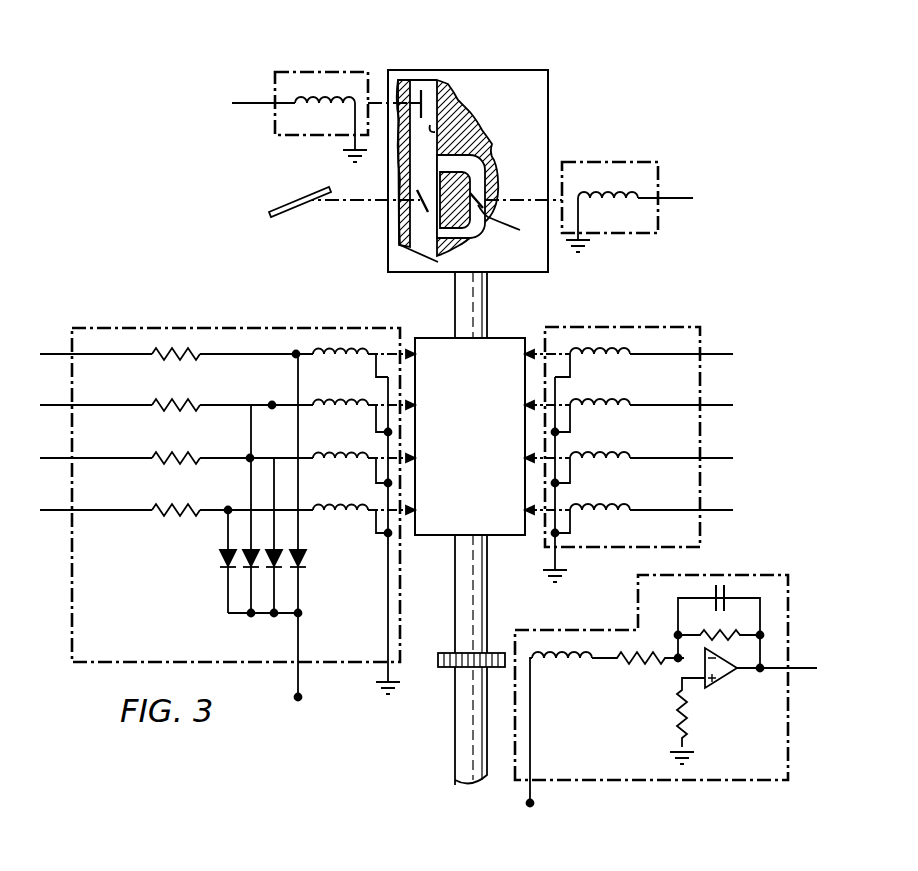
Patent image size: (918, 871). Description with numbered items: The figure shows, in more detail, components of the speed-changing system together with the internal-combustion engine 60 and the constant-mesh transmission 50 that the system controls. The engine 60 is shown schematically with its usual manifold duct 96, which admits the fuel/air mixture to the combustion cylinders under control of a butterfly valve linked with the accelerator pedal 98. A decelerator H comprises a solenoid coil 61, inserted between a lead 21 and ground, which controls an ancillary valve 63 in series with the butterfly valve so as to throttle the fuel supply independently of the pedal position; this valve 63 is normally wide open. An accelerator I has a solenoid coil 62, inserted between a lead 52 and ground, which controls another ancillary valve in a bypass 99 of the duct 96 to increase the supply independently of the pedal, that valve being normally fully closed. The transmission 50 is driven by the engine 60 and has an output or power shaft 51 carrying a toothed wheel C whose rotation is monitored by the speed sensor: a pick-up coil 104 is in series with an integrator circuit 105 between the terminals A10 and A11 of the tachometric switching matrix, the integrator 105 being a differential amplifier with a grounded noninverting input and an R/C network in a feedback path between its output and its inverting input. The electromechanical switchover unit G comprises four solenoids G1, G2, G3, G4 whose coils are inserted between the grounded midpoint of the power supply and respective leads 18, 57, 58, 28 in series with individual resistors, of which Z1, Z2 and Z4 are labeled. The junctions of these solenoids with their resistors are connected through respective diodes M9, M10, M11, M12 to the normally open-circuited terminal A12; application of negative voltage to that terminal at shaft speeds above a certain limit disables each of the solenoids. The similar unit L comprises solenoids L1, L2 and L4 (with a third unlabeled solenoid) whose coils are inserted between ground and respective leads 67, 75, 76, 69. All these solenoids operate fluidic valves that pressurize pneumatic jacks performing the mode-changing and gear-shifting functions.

The decelerator H is at (318, 72).
The solenoid coil 61 is at (345, 100).
The lead 21 is at (250, 103).
The internal-combustion engine 60 is at (532, 70).
The ancillary valve 63 is at (425, 92).
The manifold duct 96 is at (435, 128).
The bypass 99 is at (475, 165).
The accelerator pedal 98 is at (292, 203).
The accelerator I is at (632, 160).
The solenoid coil 62 is at (598, 196).
The lead 52 is at (693, 198).
The constant-mesh transmission 50 is at (435, 535).
The power shaft 51 is at (487, 596).
The toothed wheel C is at (440, 653).
The electromechanical switchover unit G is at (255, 328).
The lead 18 is at (48, 354).
The lead 57 is at (48, 405).
The lead 58 is at (48, 458).
The lead 28 is at (48, 510).
The resistor Z1 is at (178, 352).
The resistor Z2 is at (176, 457).
The resistor Z4 is at (176, 509).
The solenoid G1 is at (342, 352).
The solenoid G2 is at (340, 403).
The solenoid G3 is at (340, 456).
The solenoid G4 is at (340, 509).
The diode M11 is at (226, 550).
The diode M12 is at (222, 560).
The diode M10 is at (276, 550).
The diode M9 is at (302, 552).
The terminal A12 is at (298, 700).
The electromechanical switchover unit L is at (656, 327).
The solenoid L1 is at (598, 352).
The solenoid L2 is at (604, 456).
The solenoid L4 is at (608, 509).
The lead 67 is at (733, 354).
The lead 75 is at (733, 405).
The lead 76 is at (733, 458).
The lead 69 is at (733, 510).
The terminal A10 is at (790, 722).
The pick-up coil 104 is at (560, 668).
The integrator circuit 105 is at (736, 680).
The terminal A11 is at (530, 806).